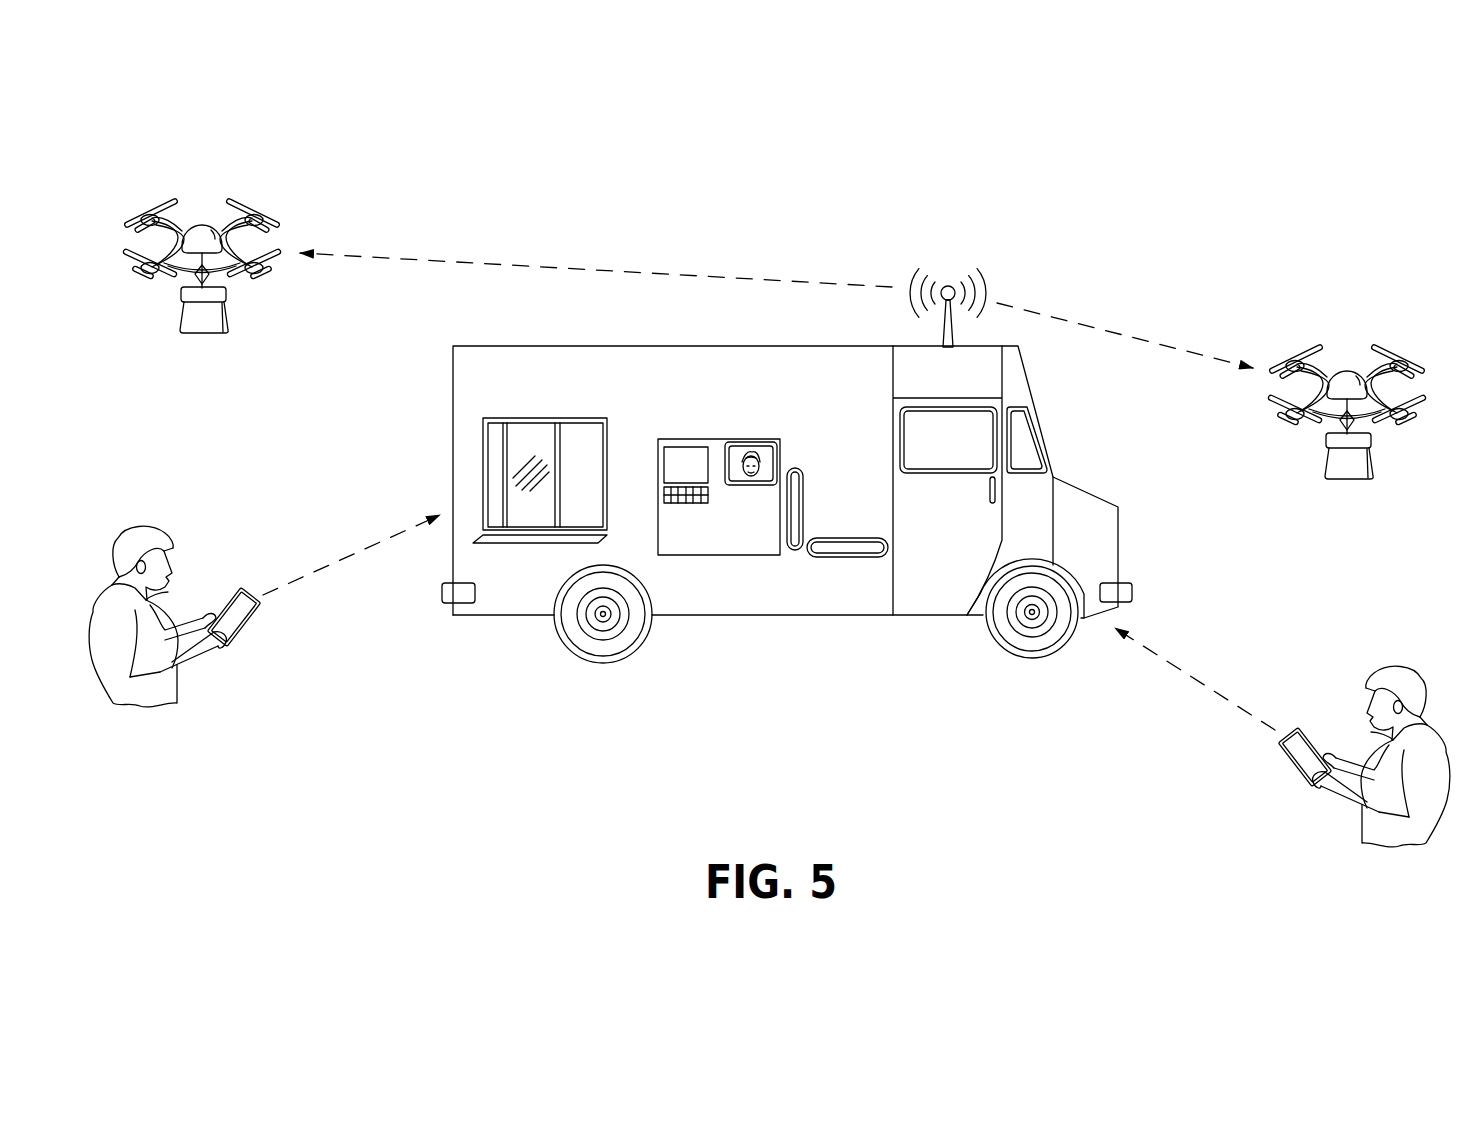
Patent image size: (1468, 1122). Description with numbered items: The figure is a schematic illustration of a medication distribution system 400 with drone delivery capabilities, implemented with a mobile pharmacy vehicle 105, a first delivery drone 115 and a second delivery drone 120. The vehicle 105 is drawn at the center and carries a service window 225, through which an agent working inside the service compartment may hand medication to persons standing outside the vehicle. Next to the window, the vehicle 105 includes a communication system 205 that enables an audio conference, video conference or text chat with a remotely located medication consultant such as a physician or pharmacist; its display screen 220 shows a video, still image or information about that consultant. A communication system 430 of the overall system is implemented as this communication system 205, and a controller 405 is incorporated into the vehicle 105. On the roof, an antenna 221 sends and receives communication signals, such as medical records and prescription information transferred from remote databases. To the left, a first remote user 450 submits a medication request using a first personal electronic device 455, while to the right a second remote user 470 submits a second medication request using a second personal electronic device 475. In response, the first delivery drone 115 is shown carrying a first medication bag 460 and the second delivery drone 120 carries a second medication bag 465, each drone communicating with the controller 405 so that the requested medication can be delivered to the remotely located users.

The mobile pharmacy vehicle 105 is at (508, 597).
The first delivery drone 115 is at (207, 200).
The second delivery drone 120 is at (1343, 343).
The communication system 205 is at (717, 440).
The display screen 220 is at (757, 441).
The antenna 221 is at (942, 339).
The service window 225 is at (483, 478).
The medication distribution system 400 is at (882, 197).
The controller 405 is at (752, 517).
The communication system 430 is at (678, 425).
The first remote user 450 is at (130, 520).
The first personal electronic device 455 is at (232, 610).
The first medication bag 460 is at (200, 323).
The second medication bag 465 is at (1345, 470).
The second remote user 470 is at (1405, 658).
The second personal electronic device 475 is at (1308, 747).